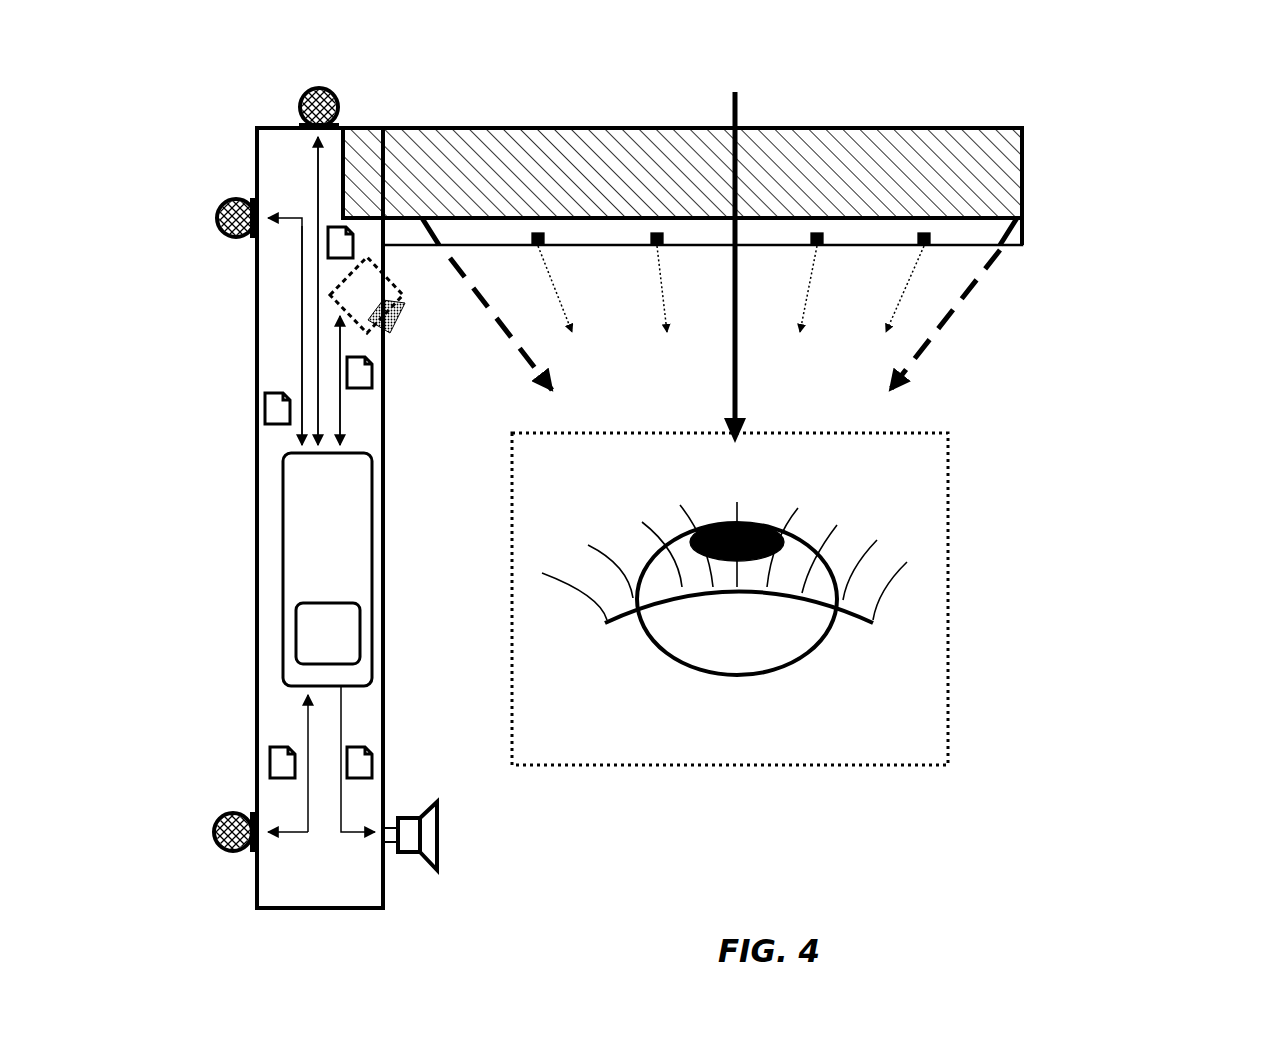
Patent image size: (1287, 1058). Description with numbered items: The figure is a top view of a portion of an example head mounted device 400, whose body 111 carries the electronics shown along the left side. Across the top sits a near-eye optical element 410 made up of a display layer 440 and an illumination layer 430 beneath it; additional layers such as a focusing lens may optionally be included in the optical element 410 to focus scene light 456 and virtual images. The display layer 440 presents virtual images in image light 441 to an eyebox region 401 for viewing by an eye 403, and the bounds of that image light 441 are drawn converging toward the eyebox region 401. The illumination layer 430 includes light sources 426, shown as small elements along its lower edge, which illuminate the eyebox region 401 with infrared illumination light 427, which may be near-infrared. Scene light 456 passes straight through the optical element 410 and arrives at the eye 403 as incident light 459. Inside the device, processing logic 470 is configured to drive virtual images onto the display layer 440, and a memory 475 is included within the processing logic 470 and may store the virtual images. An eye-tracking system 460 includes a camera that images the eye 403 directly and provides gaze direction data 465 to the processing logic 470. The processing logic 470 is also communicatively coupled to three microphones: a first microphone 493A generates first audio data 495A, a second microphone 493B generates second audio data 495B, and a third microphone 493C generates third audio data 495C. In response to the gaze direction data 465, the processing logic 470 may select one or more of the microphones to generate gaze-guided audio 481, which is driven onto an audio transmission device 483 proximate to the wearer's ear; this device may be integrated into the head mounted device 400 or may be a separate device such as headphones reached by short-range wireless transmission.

The head mounted device 400 is at (1193, 64).
The controller housing 111 is at (352, 892).
The display layer 440 is at (1022, 167).
The illumination layer 430 is at (1025, 232).
The near-eye optical element 410 is at (1200, 127).
The scene light 456 is at (737, 241).
The light incident on eye 459 is at (737, 447).
The light sources 426 is at (545, 247).
The infrared illumination light 427 is at (731, 307).
The image light 441 is at (872, 410).
The eyebox region 401 is at (948, 732).
The eye 403 is at (826, 680).
The processing logic 470 is at (313, 526).
The memory 475 is at (313, 656).
The eye-tracking system 460 is at (347, 301).
The gaze direction data 465 is at (372, 375).
The first audio data 495A is at (265, 412).
The second audio data 495B is at (353, 242).
The third audio data 495C is at (270, 760).
The gaze-guided audio 481 is at (372, 765).
The audio transmission device 483 is at (437, 802).
The first microphone 493A is at (222, 205).
The second microphone 493B is at (305, 93).
The third microphone 493C is at (222, 815).